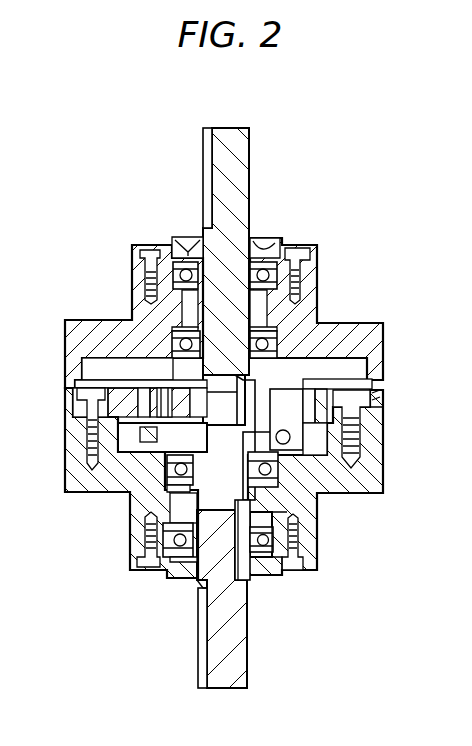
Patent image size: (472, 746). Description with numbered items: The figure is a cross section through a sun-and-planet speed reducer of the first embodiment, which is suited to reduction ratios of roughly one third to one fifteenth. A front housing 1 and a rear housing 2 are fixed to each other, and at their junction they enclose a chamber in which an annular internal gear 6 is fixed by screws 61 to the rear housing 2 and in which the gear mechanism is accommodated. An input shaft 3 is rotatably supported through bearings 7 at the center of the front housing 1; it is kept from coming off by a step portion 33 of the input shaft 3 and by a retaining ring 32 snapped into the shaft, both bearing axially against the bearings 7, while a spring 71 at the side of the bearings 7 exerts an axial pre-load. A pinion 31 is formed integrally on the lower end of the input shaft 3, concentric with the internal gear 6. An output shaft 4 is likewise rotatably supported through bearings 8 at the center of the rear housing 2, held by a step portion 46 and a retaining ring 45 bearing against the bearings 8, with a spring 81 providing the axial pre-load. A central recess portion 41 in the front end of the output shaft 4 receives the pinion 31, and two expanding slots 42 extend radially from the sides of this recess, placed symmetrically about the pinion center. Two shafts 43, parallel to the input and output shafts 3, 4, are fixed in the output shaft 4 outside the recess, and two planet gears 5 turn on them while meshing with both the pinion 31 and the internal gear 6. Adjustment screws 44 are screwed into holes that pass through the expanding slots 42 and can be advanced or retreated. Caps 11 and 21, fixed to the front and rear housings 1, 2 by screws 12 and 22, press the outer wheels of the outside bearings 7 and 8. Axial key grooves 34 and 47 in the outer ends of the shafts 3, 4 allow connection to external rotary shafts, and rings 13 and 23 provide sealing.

The front housing 1 is at (313, 310).
The rear housing 2 is at (375, 483).
The input shaft 3 is at (250, 157).
The output shaft 4 is at (250, 655).
The planet gears 5 is at (77, 400).
The internal gear 6 is at (380, 420).
The bearings 7 is at (150, 277).
The bearings 8 is at (276, 536).
The cap 11 is at (322, 265).
The screws 12 is at (318, 243).
The ring 13 is at (262, 238).
The cap 21 is at (316, 558).
The screws 22 is at (300, 572).
The ring 23 is at (255, 583).
The pinion 31 is at (165, 494).
The retaining ring 32 is at (205, 232).
The step portion 33 is at (255, 358).
The axial key groove 34 is at (203, 178).
The central recess portion 41 is at (383, 380).
The expanding slots 42 is at (358, 438).
The shafts 43 is at (86, 437).
The adjustment screws 44 is at (290, 442).
The retaining ring 45 is at (200, 600).
The step portion 46 is at (142, 545).
The axial key groove 47 is at (198, 660).
The screws 61 is at (378, 396).
The spring 71 is at (170, 308).
The spring 81 is at (168, 512).